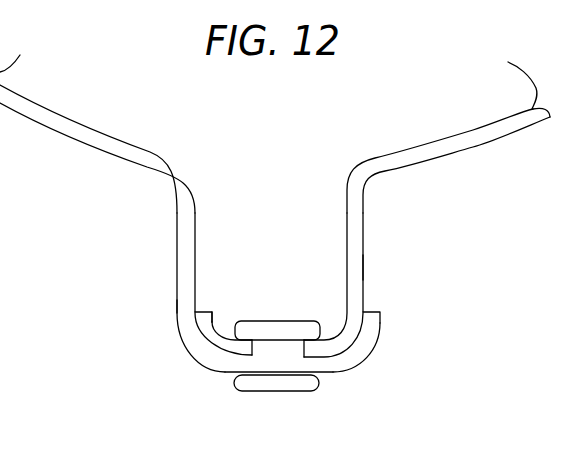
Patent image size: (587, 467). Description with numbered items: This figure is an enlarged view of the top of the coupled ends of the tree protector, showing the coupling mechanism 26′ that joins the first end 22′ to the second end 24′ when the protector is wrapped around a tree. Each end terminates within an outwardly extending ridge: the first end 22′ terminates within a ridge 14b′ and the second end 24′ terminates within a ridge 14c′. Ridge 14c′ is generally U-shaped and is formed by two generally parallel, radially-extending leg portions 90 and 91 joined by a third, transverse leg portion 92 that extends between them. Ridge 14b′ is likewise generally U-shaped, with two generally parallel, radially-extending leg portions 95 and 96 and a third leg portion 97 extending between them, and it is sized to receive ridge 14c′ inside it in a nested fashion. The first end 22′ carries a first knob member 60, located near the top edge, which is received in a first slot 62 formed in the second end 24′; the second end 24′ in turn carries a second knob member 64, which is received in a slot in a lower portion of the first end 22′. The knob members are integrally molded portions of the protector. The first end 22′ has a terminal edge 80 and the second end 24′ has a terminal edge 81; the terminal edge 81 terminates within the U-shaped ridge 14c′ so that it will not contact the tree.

The first end 22′ is at (155, 206).
The second end 24′ is at (383, 207).
The coupling mechanism 26′ is at (160, 388).
The leg portion 96 is at (175, 250).
The leg portion 90 is at (365, 245).
The ridge 14b′ is at (177, 333).
The ridge 14c′ is at (365, 265).
The terminal edge 81 is at (200, 305).
The leg portion 91 is at (212, 315).
The transverse leg portion 92 is at (225, 334).
The first knob member 60 is at (282, 319).
The first slot 62 is at (300, 348).
The second knob member 64 is at (252, 392).
The terminal edge 80 is at (373, 312).
The leg portion 95 is at (380, 325).
The leg portion 97 is at (327, 375).